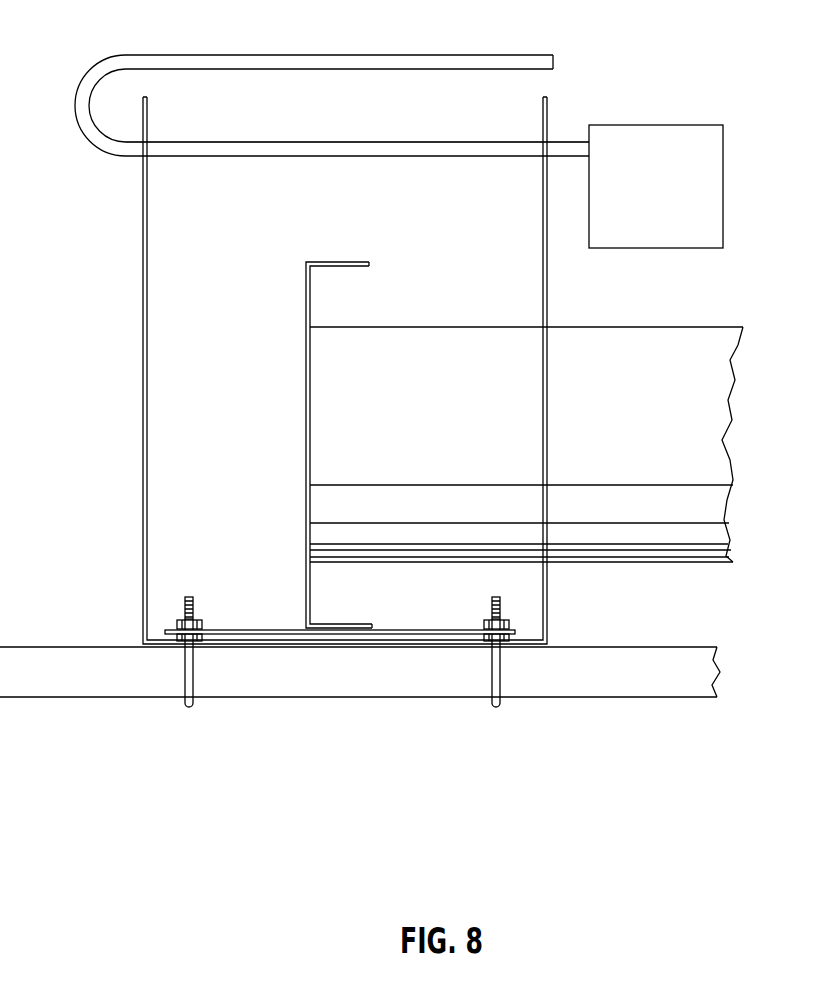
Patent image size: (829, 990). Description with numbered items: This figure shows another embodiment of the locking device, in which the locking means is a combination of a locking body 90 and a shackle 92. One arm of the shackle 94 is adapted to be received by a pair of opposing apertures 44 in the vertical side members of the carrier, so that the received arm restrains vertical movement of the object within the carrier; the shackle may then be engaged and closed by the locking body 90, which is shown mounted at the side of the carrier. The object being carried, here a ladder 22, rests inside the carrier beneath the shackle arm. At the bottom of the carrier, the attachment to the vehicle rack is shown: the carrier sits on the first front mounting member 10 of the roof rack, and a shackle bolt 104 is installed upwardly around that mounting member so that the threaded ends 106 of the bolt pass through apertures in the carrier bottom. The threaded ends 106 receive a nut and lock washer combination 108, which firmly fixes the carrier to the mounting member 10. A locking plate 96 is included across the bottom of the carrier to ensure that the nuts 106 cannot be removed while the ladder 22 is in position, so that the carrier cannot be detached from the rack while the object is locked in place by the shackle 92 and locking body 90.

The first front mounting member 10 is at (595, 697).
The ladder 22 is at (305, 340).
The pair of opposing apertures 44 is at (148, 158).
The locking body 90 is at (653, 248).
The shackle 92 is at (555, 62).
The arm of the shackle 94 is at (295, 156).
The locking plate 96 is at (233, 634).
The shackle bolt 104 is at (186, 708).
The threaded ends 106 is at (185, 600).
The nut and lock washer combination 108 is at (170, 636).